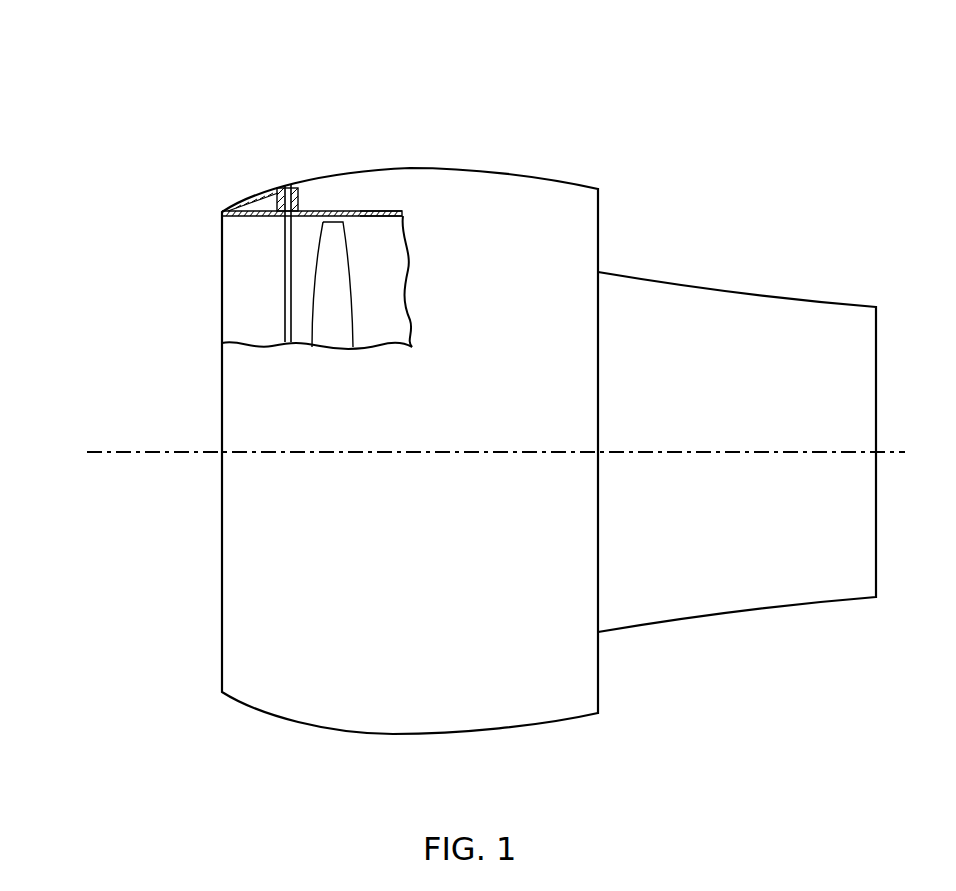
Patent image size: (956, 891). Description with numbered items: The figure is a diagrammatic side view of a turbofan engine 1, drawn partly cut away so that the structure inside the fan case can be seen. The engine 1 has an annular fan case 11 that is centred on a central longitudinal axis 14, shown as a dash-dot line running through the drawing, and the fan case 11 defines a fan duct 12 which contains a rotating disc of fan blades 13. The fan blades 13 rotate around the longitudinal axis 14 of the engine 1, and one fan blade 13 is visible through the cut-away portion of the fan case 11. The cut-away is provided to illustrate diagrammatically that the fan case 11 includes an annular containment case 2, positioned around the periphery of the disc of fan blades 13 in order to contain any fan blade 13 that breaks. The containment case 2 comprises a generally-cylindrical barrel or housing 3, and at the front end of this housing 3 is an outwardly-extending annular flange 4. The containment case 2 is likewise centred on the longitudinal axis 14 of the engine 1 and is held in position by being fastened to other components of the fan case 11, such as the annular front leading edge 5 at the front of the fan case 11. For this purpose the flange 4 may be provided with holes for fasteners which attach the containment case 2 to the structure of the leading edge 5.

The turbofan engine 1 is at (651, 93).
The containment case 2 is at (363, 211).
The barrel or housing 3 is at (387, 212).
The flange 4 is at (297, 201).
The front leading edge 5 is at (255, 193).
The fan case 11 is at (498, 173).
The fan duct 12 is at (178, 316).
The fan blades 13 is at (335, 266).
The longitudinal axis 14 is at (176, 453).